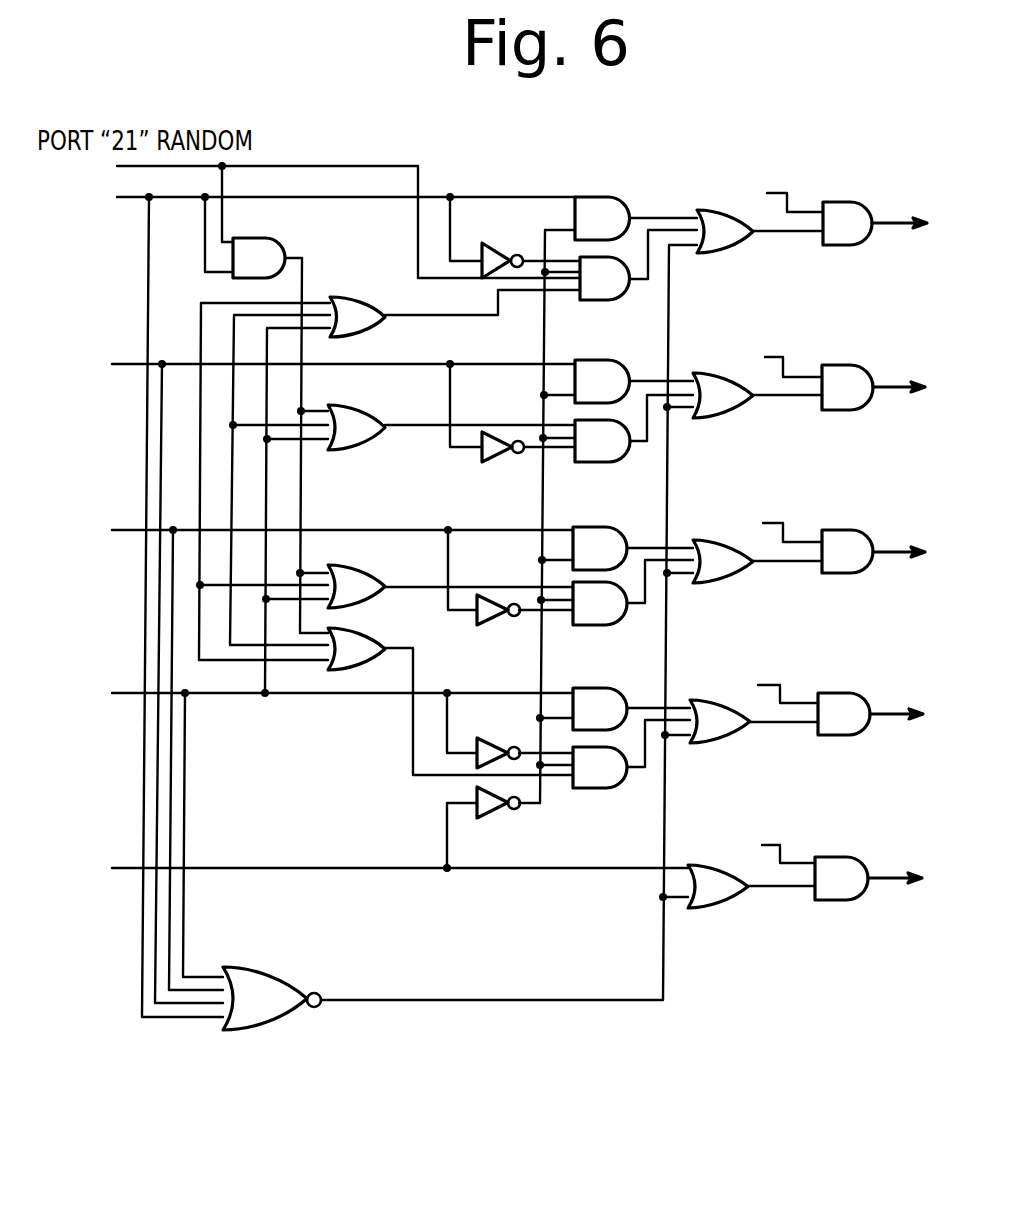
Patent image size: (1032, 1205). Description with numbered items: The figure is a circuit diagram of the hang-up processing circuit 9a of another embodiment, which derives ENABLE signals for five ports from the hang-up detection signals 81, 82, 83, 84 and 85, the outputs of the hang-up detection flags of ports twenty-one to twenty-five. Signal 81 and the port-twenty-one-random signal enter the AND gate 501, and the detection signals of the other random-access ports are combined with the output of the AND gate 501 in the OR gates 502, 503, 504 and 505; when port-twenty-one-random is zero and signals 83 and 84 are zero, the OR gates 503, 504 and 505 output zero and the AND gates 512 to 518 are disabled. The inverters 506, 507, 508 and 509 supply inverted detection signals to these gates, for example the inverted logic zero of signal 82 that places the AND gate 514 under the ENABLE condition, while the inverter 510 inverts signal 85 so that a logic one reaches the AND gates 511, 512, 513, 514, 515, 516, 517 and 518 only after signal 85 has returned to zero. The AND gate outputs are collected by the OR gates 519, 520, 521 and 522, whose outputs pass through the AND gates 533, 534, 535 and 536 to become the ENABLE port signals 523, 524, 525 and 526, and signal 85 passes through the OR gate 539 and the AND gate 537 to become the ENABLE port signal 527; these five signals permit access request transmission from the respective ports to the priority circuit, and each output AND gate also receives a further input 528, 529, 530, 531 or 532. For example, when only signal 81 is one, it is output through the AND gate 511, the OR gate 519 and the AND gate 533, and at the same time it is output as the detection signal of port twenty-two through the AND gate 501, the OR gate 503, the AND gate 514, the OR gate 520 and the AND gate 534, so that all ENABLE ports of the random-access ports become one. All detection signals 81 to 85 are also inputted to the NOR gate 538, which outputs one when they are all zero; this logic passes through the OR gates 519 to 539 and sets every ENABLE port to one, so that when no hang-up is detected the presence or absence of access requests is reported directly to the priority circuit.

The random number generating logic circuit 9a is at (528, 193).
The hang-up detection signal 81 is at (321, 196).
The hang-up detection signal 82 is at (321, 364).
The hang-up detection signal 83 is at (320, 530).
The hang-up detection signal 84 is at (320, 693).
The hang-up detection signal 85 is at (378, 867).
The AND gate 501 is at (246, 218).
The OR gate 502 is at (344, 275).
The OR gate 503 is at (345, 405).
The OR gate 504 is at (372, 547).
The OR gate 505 is at (378, 612).
The inverter 506 is at (503, 233).
The inverter 507 is at (489, 462).
The inverter 508 is at (491, 625).
The inverter 509 is at (491, 738).
The inverter 510 is at (494, 818).
The AND gate 511 is at (600, 181).
The AND gate 512 is at (590, 300).
The AND gate 513 is at (582, 347).
The AND gate 514 is at (600, 462).
The AND gate 515 is at (586, 527).
The AND gate 516 is at (600, 625).
The AND gate 517 is at (590, 672).
The AND gate 518 is at (622, 788).
The OR gate 519 is at (745, 210).
The OR gate 520 is at (712, 373).
The OR gate 521 is at (705, 540).
The OR gate 522 is at (703, 700).
The ENABLE port signal 523 is at (783, 235).
The ENABLE port signal 524 is at (783, 399).
The ENABLE port signal 525 is at (783, 564).
The ENABLE port signal 526 is at (778, 725).
The ENABLE port signal 527 is at (781, 889).
The enable signal input line 528 is at (771, 193).
The enable signal input line 529 is at (769, 357).
The enable signal input line 530 is at (771, 516).
The enable signal input line 531 is at (764, 685).
The enable signal input line 532 is at (769, 845).
The AND gate 533 is at (834, 202).
The AND gate 534 is at (855, 365).
The AND gate 535 is at (855, 530).
The AND gate 536 is at (852, 693).
The AND gate 537 is at (850, 857).
The NOR gate 538 is at (276, 946).
The OR gate 539 is at (700, 863).